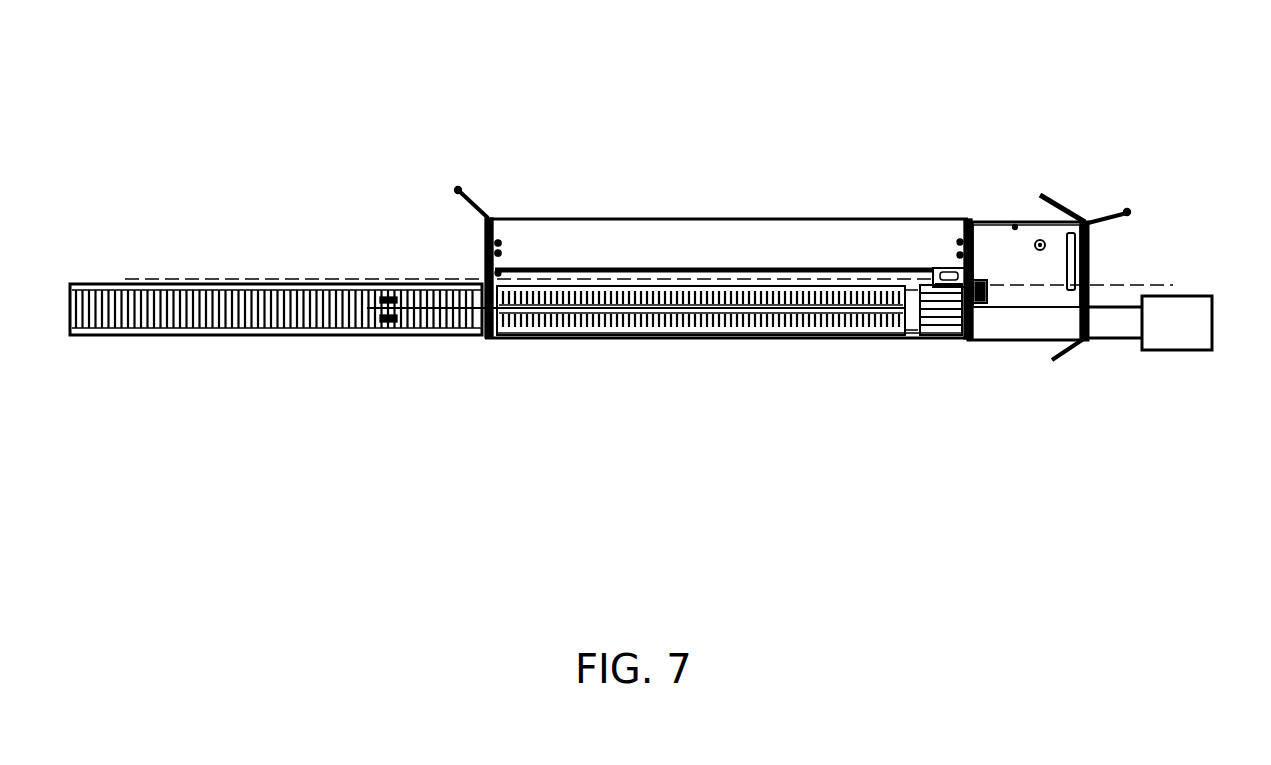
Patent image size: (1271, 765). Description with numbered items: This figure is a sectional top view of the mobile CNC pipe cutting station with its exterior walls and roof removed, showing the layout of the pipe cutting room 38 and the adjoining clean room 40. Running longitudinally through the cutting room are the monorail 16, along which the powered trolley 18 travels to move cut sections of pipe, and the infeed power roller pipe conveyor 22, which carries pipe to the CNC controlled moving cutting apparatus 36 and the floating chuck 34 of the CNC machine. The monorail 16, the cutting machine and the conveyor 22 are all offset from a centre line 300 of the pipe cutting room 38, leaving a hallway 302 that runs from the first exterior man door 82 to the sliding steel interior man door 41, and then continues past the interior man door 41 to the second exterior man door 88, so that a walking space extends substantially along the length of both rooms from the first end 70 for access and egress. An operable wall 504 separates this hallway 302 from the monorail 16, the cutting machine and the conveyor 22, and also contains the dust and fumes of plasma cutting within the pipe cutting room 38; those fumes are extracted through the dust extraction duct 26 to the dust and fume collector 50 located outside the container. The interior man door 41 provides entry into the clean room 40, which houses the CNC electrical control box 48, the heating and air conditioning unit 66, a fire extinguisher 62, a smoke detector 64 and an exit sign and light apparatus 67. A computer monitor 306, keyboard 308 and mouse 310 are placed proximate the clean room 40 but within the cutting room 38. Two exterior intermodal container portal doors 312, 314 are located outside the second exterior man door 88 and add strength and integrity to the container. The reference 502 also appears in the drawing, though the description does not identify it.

The monorail 16 is at (432, 339).
The powered trolley 18 is at (388, 292).
The infeed power roller pipe conveyor 22 is at (645, 340).
The dust extraction duct 26 is at (992, 342).
The floating chuck 34 is at (905, 342).
The CNC controlled moving cutting apparatus 36 is at (765, 342).
The pipe cutting room 38 is at (657, 123).
The clean room 40 is at (1047, 170).
The steel interior man door 41 is at (988, 222).
The CNC electrical control box 48 is at (990, 288).
The dust and fume collector 50 is at (1178, 296).
The fire extinguisher 62 is at (502, 270).
The smoke detector 64 is at (1085, 220).
The heating and air conditioning unit 66 is at (1092, 223).
The exit sign and light apparatus 67 is at (494, 265).
The first end 70 is at (500, 242).
The first exterior man door 82 is at (472, 207).
The second exterior man door 88 is at (1130, 211).
The centre line 300 is at (315, 283).
The hallway 302 is at (690, 240).
The computer monitor 306 is at (948, 270).
The keyboard 308 is at (952, 272).
The mouse 310 is at (957, 275).
The exterior intermodal container portal door 312 is at (1080, 352).
The exterior intermodal container portal door 314 is at (1043, 239).
The conveyor rollers 502 is at (207, 283).
The operable wall 504 is at (603, 268).